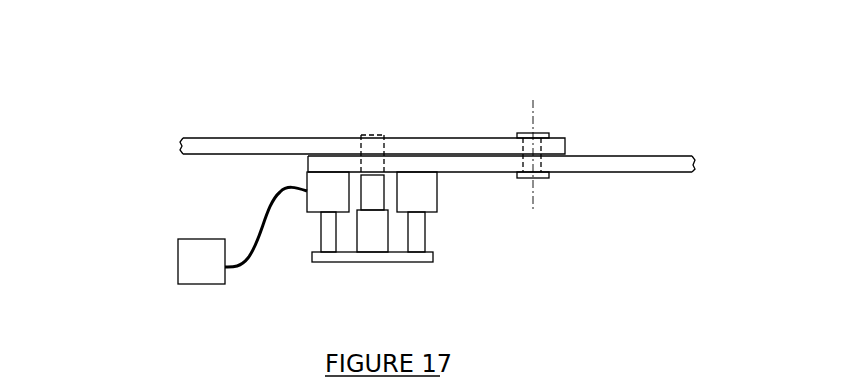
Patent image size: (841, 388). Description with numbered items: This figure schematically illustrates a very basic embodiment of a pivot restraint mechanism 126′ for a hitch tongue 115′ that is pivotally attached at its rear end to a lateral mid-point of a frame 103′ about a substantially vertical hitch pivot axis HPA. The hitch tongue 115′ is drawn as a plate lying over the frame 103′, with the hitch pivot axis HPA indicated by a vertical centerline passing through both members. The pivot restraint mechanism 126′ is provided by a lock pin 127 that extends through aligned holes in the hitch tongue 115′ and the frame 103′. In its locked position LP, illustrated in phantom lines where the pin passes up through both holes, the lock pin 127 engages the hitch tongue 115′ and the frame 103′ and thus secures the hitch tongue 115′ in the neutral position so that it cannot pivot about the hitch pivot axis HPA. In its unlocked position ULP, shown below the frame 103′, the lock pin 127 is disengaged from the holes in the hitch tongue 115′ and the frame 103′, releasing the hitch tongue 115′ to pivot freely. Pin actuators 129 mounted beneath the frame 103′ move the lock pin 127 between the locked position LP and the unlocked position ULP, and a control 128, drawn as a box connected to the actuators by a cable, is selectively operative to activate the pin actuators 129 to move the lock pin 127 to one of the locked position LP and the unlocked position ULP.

The hitch tongue 115′ is at (238, 138).
The frame 103′ is at (622, 156).
The locked position LP is at (380, 136).
The unlocked position ULP is at (361, 198).
The hitch pivot axis HPA is at (533, 189).
The pivot restraint mechanism 126′ is at (570, 78).
The lock pin 127 is at (383, 197).
The control 128 is at (178, 270).
The pin actuators 129 is at (437, 198).